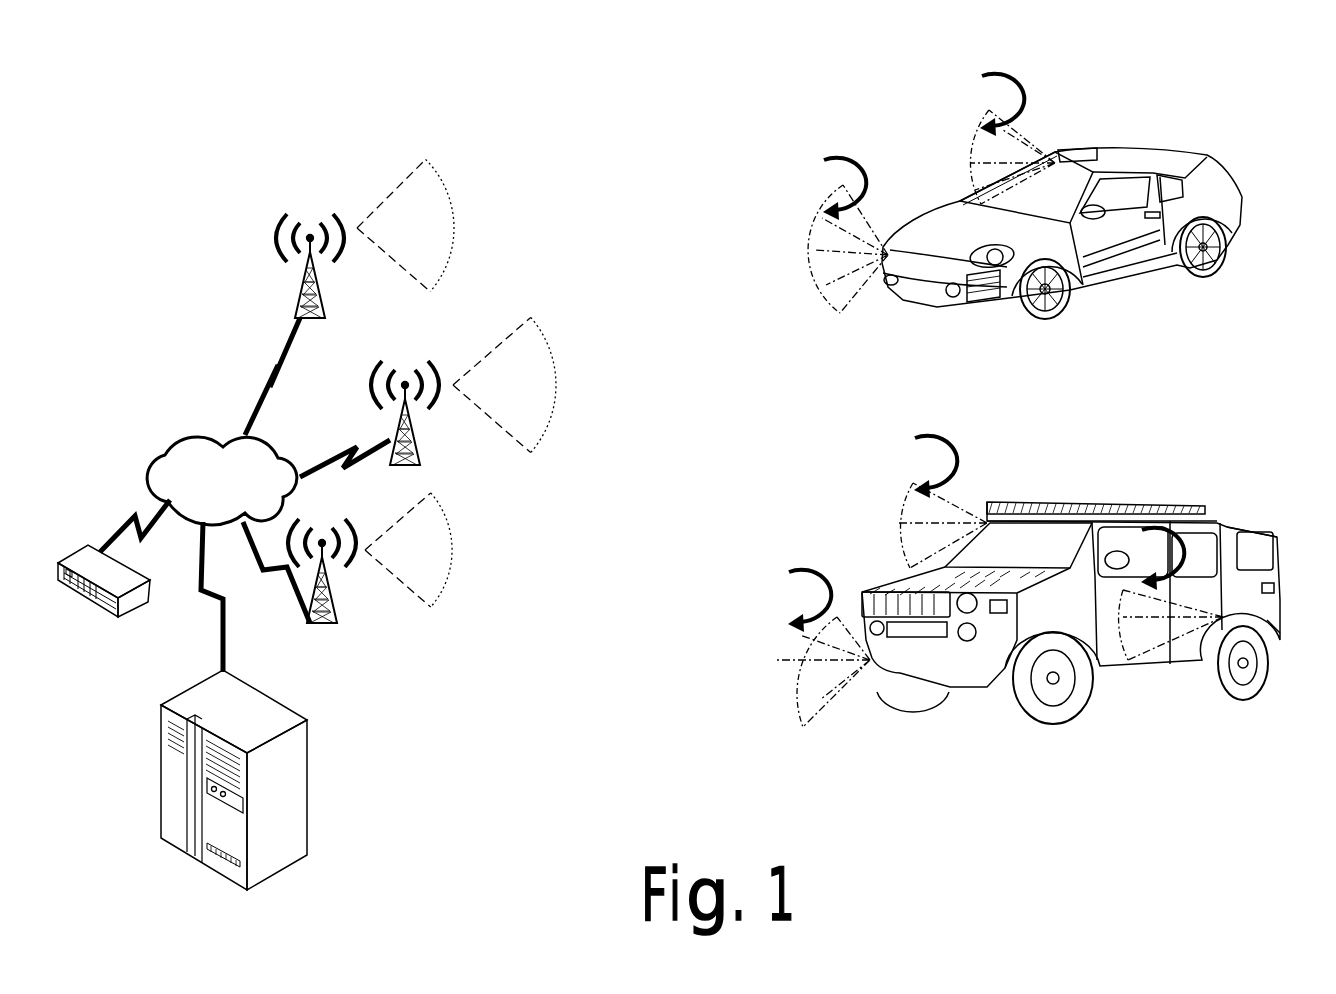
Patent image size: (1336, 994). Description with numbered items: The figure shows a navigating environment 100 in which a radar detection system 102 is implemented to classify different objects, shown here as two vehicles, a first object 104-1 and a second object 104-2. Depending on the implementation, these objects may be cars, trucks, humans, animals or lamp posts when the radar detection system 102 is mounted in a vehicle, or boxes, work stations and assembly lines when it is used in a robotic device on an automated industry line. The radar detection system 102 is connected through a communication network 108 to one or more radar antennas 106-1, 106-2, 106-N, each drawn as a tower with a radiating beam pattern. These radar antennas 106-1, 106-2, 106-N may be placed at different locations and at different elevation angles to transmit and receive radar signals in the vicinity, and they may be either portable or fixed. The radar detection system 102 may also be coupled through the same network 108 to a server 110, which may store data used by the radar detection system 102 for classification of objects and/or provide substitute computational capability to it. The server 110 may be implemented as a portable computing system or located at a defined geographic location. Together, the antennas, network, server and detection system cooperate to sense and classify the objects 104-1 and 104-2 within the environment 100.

The navigating environment 100 is at (194, 76).
The radar detection system 102 is at (136, 612).
The object 104-1 is at (1038, 320).
The object 104-2 is at (1018, 503).
The radar antenna 106-1 is at (300, 312).
The radar antenna 106-2 is at (418, 445).
The radar antenna 106-N is at (336, 612).
The communication network 108 is at (222, 481).
The server 110 is at (303, 714).